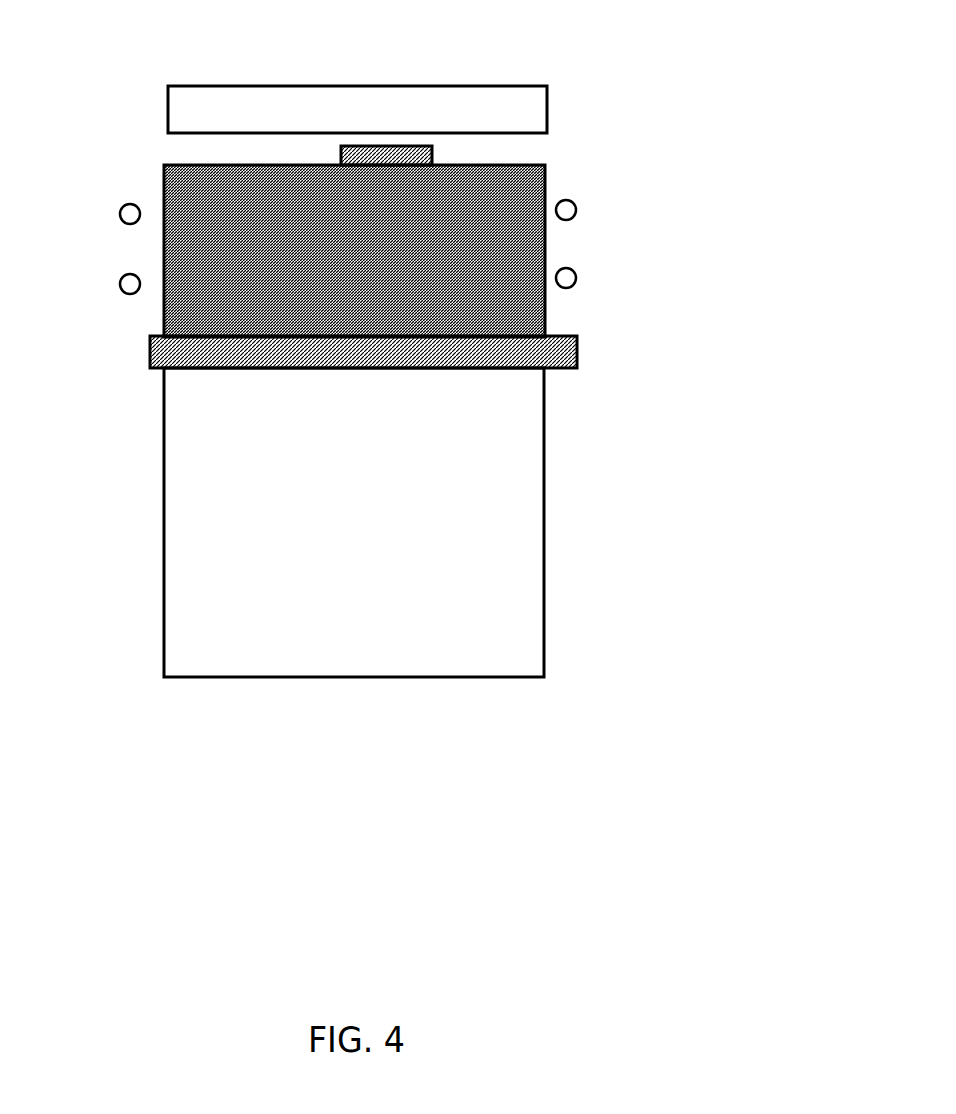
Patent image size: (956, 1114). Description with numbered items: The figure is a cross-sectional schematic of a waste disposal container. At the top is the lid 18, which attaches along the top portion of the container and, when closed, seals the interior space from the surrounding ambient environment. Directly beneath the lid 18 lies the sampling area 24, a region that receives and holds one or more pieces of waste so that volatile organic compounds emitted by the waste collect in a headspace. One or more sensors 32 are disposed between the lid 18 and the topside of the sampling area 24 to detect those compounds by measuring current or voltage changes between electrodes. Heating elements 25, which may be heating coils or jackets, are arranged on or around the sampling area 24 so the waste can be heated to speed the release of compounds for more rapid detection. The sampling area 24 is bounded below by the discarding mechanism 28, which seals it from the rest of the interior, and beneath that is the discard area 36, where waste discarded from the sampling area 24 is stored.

The lid 18 is at (498, 86).
The sampling area 24 is at (545, 257).
The heating element 25 is at (120, 212).
The discarding mechanism 28 is at (578, 353).
The sensor 32 is at (432, 155).
The discard area 36 is at (545, 575).